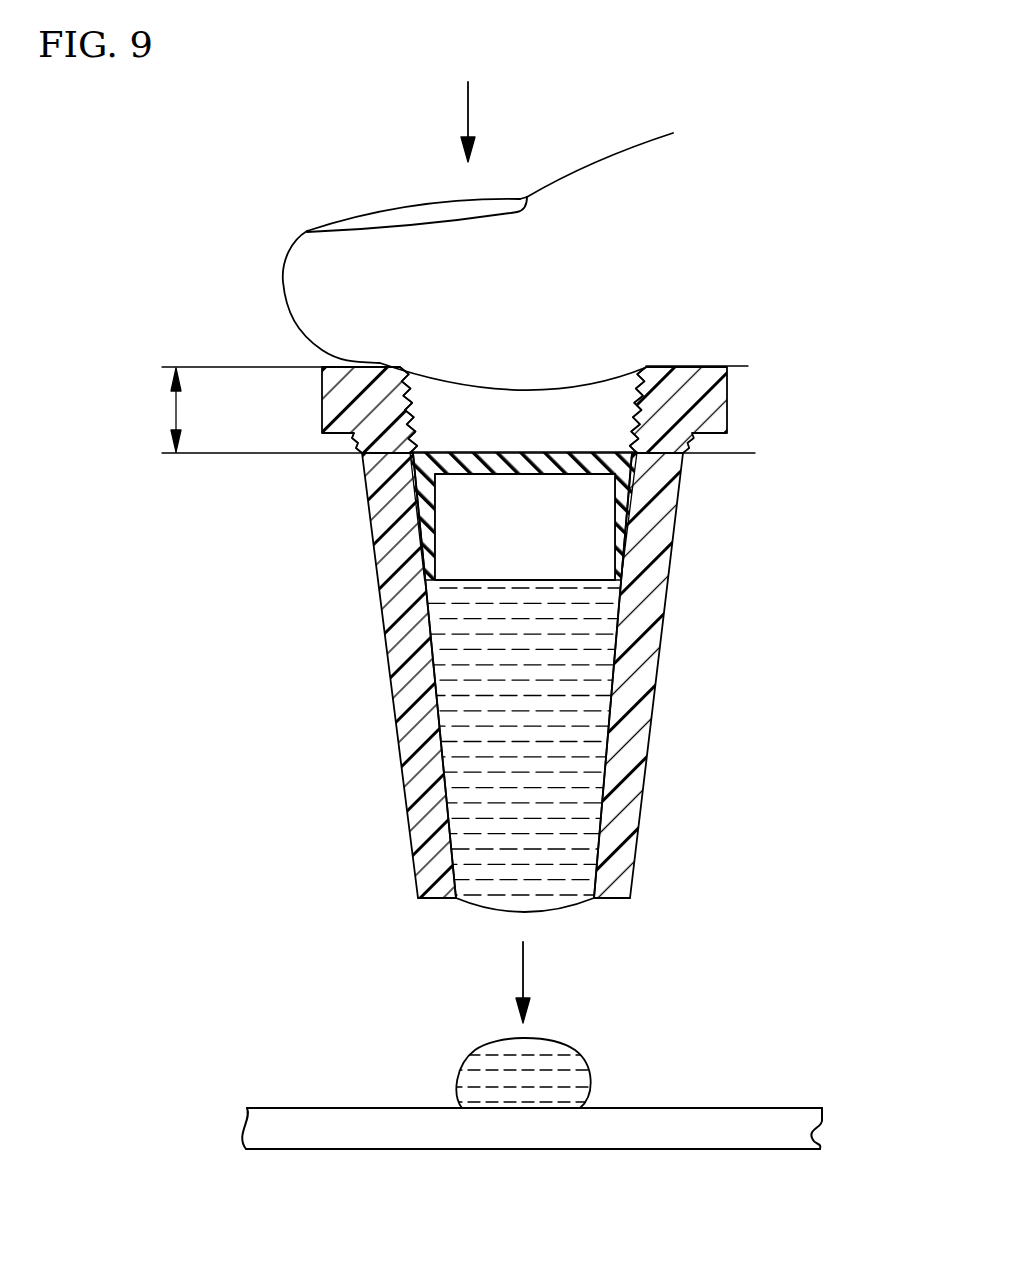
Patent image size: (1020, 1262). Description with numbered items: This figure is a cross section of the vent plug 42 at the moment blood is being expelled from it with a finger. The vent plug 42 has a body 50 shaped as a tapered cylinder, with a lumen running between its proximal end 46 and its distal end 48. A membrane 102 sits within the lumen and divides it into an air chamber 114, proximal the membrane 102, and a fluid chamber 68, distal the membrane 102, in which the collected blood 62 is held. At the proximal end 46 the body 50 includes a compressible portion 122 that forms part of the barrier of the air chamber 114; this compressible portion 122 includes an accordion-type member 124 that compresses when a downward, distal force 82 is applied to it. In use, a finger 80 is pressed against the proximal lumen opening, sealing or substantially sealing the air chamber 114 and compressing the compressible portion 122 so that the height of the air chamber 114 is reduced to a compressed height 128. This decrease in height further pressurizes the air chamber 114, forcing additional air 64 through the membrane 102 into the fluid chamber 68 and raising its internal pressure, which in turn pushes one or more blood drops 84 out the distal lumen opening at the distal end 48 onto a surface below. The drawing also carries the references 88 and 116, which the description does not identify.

The vent plug 42 is at (652, 668).
The proximal end 46 is at (337, 368).
The distal end 48 is at (610, 898).
The body 50 is at (412, 768).
The blood 62 is at (583, 752).
The air 64 is at (497, 522).
The fluid chamber 68 is at (468, 668).
The finger 80 is at (590, 168).
The downward force 82 is at (462, 97).
The blood drop 84 is at (547, 1063).
The dispensing direction 88 is at (525, 967).
The membrane 102 is at (622, 542).
The air chamber 114 is at (507, 430).
The inner thread 116 is at (647, 368).
The compressible portion 122 is at (762, 365).
The accordion-type member 124 is at (353, 443).
The compressed height 128 is at (175, 407).